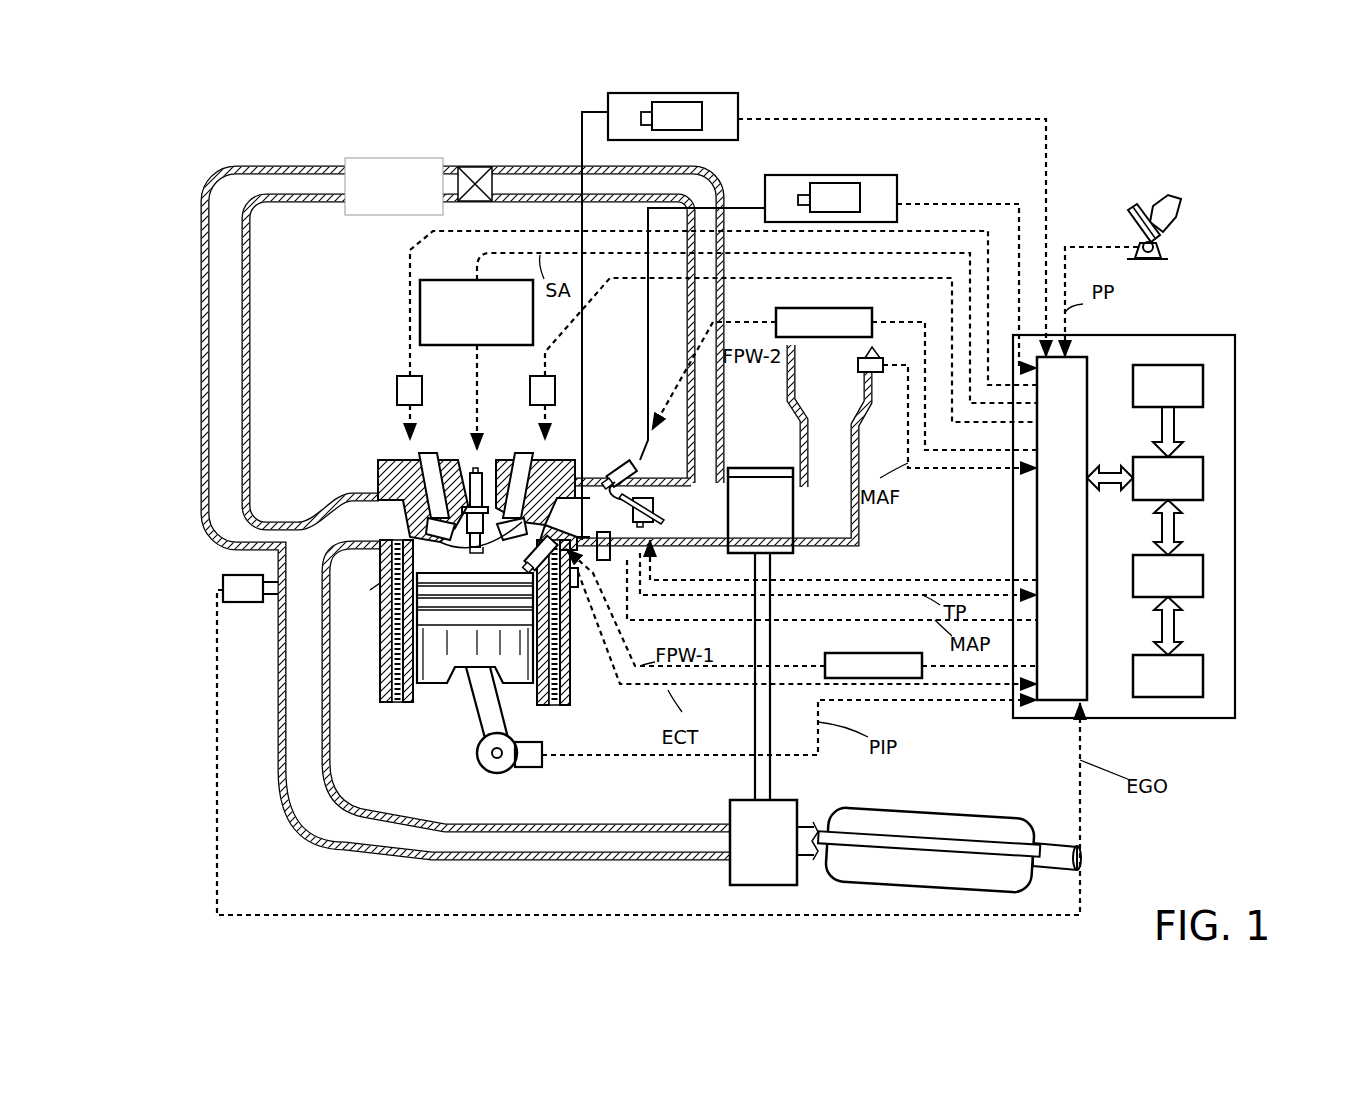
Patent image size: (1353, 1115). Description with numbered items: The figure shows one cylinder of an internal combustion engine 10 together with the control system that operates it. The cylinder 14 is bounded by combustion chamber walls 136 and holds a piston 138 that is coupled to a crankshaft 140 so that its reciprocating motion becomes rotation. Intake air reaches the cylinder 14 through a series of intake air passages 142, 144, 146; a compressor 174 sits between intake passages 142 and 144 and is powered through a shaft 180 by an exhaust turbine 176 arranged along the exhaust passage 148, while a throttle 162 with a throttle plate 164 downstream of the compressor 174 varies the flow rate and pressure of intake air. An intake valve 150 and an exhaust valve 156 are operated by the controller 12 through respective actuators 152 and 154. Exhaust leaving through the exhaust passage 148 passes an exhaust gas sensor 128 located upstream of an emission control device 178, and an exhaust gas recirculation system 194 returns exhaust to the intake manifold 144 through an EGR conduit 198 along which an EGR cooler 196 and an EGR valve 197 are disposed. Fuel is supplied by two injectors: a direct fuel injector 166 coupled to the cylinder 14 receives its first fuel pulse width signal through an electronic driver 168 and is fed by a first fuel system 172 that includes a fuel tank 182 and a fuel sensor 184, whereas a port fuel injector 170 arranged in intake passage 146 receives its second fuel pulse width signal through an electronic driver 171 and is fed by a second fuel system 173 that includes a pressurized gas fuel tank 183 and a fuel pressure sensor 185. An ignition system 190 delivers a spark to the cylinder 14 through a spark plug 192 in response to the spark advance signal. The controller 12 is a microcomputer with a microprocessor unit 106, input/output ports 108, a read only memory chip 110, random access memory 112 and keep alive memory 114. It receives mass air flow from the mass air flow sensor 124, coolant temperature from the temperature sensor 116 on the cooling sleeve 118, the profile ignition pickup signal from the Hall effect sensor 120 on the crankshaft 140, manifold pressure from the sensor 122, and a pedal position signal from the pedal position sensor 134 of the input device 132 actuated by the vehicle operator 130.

The internal combustion engine 10 is at (325, 389).
The controller 12 is at (1228, 335).
The cylinder 14 is at (370, 590).
The microprocessor unit 106 is at (1203, 465).
The input/output ports 108 is at (1088, 360).
The read only memory chip 110 is at (1203, 372).
The random access memory 112 is at (1203, 563).
The keep alive memory 114 is at (1203, 665).
The temperature sensor 116 is at (575, 590).
The cooling sleeve 118 is at (553, 657).
The Hall effect sensor 120 is at (530, 767).
The manifold pressure sensor 122 is at (880, 358).
The mass air flow sensor 124 is at (607, 560).
The exhaust gas sensor 128 is at (223, 580).
The vehicle operator 130 is at (1181, 207).
The input device 132 is at (1128, 222).
The pedal position sensor 134 is at (1165, 248).
The combustion chamber walls 136 is at (412, 702).
The piston 138 is at (458, 655).
The crankshaft 140 is at (482, 767).
The intake air passage 142 is at (815, 395).
The intake manifold 144 is at (683, 527).
The intake air passage 146 is at (612, 527).
The exhaust passage 148 is at (362, 538).
The intake valve 150 is at (488, 497).
The actuator 152 is at (530, 388).
The actuator 154 is at (397, 388).
The exhaust valve 156 is at (400, 492).
The throttle 162 is at (650, 497).
The throttle plate 164 is at (604, 480).
The fuel injector 166 is at (544, 541).
The electronic driver 168 is at (827, 653).
The fuel injector 170 is at (606, 465).
The electronic driver 171 is at (778, 310).
The first fuel system 172 is at (705, 93).
The second fuel system 173 is at (888, 175).
The compressor 174 is at (748, 468).
The exhaust turbine 176 is at (730, 872).
The emission control device 178 is at (995, 815).
The shaft 180 is at (770, 765).
The fuel tank 182 is at (673, 102).
The pressurized gas fuel tank 183 is at (840, 183).
The fuel sensor 184 is at (641, 112).
The fuel pressure sensor 185 is at (798, 198).
The ignition system 190 is at (435, 280).
The spark plug 192 is at (472, 495).
The exhaust gas recirculation system 194 is at (180, 246).
The EGR cooler 196 is at (393, 158).
The EGR valve 197 is at (473, 167).
The EGR conduit 198 is at (552, 167).